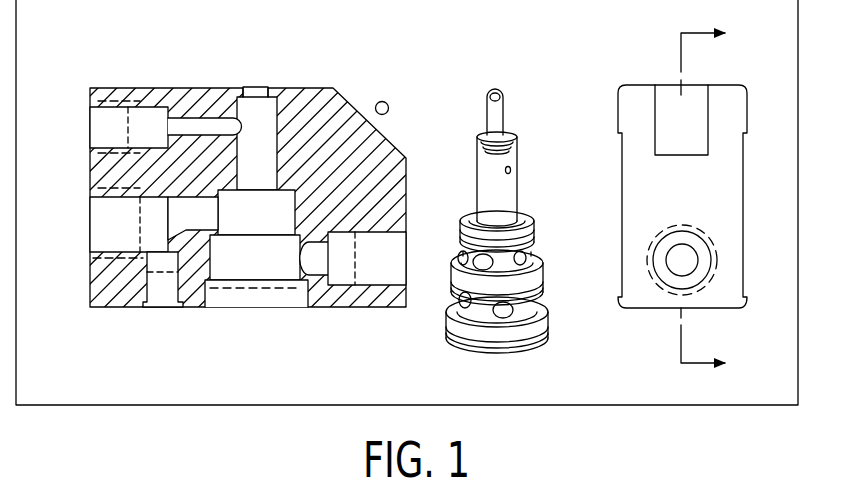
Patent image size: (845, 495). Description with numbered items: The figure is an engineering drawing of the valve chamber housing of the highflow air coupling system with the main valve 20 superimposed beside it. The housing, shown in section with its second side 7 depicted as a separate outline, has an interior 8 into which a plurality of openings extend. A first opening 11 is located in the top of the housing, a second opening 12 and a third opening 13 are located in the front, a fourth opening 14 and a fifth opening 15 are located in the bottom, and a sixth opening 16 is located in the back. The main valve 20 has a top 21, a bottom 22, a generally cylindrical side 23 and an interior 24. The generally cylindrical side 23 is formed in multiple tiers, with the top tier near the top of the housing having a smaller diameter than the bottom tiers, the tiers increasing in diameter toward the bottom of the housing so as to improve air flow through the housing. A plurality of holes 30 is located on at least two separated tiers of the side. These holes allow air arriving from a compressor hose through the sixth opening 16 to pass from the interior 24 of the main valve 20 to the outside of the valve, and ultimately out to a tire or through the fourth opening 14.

The second side 7 is at (720, 193).
The interior 8 is at (285, 95).
The first opening 11 is at (253, 88).
The second opening 12 is at (90, 118).
The third opening 13 is at (90, 217).
The fourth opening 14 is at (163, 307).
The fifth opening 15 is at (250, 307).
The sixth opening 16 is at (407, 258).
The main valve 20 is at (477, 165).
The top 21 is at (503, 128).
The bottom 22 is at (458, 338).
The generally cylindrical side 23 is at (503, 188).
The interior 24 is at (462, 258).
The plurality of holes 30 is at (507, 312).